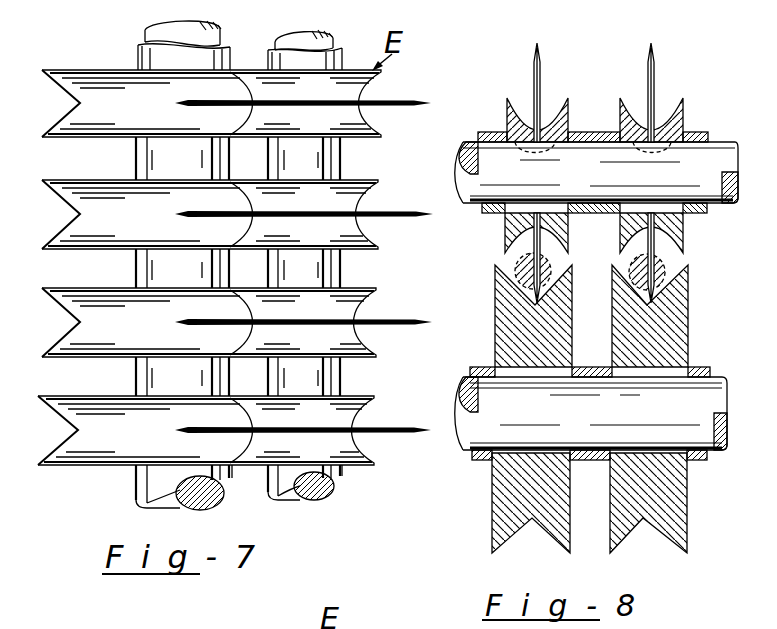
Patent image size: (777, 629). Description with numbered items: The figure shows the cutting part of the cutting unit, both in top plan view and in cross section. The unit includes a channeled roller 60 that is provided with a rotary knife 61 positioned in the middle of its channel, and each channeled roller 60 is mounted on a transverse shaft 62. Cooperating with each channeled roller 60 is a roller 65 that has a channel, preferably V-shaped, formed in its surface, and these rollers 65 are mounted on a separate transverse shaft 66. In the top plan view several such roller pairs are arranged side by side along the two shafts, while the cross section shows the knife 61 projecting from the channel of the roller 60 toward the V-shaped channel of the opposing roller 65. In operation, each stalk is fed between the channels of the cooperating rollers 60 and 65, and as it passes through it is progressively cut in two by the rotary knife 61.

In FIG. 7, the channeled roller 60 is at (365, 182).
In FIG. 8, the channeled roller 60 is at (508, 116).
In FIG. 7, the rotary knife 61 is at (402, 100).
In FIG. 8, the rotary knife 61 is at (533, 65).
In FIG. 7, the transverse shaft 62 is at (315, 499).
In FIG. 8, the transverse shaft 62 is at (472, 170).
In FIG. 7, the roller 65 is at (83, 70).
In FIG. 8, the roller 65 is at (495, 296).
In FIG. 7, the transverse shaft 66 is at (178, 500).
In FIG. 8, the transverse shaft 66 is at (472, 408).